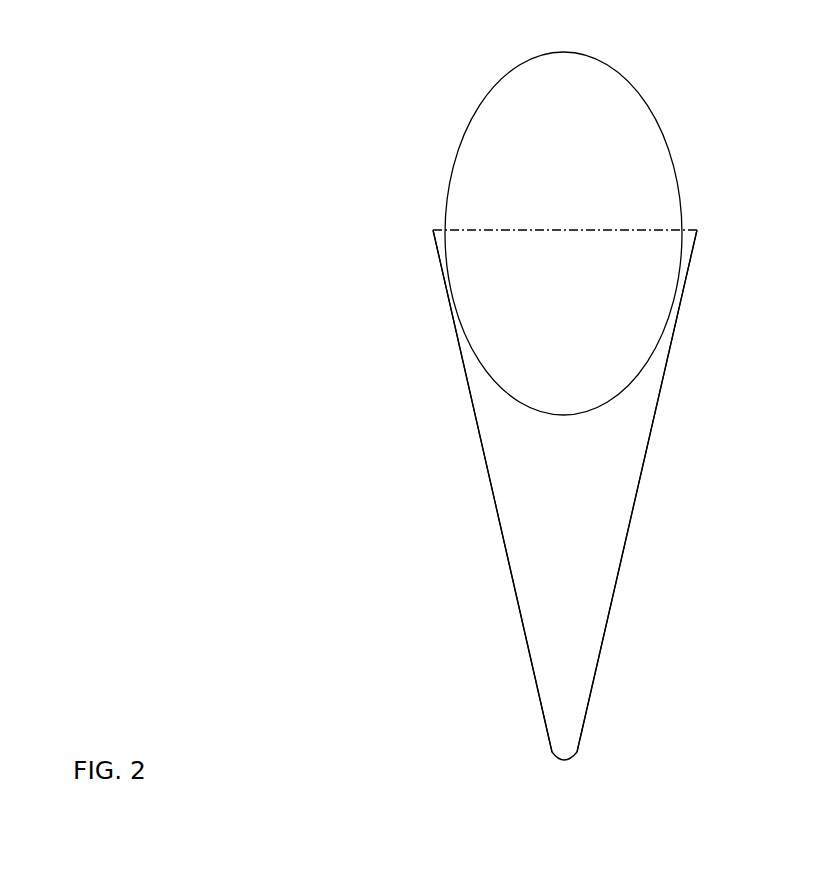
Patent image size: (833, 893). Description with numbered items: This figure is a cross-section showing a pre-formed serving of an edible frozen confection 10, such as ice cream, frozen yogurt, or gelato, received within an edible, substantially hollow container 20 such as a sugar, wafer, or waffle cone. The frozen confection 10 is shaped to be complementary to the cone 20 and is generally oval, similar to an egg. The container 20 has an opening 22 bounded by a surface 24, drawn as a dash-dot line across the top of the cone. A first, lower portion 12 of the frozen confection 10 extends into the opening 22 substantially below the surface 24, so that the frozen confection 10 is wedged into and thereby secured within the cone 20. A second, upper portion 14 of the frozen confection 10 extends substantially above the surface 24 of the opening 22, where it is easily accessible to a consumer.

The frozen confection 10 is at (377, 100).
The lower portion 12 is at (513, 315).
The upper portion 14 is at (580, 142).
The container 20 is at (642, 478).
The opening 22 is at (553, 502).
The surface 24 is at (668, 229).